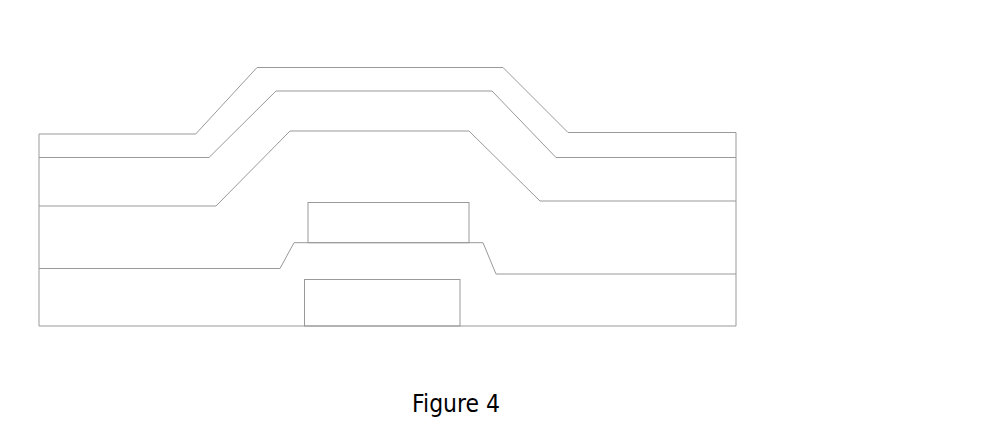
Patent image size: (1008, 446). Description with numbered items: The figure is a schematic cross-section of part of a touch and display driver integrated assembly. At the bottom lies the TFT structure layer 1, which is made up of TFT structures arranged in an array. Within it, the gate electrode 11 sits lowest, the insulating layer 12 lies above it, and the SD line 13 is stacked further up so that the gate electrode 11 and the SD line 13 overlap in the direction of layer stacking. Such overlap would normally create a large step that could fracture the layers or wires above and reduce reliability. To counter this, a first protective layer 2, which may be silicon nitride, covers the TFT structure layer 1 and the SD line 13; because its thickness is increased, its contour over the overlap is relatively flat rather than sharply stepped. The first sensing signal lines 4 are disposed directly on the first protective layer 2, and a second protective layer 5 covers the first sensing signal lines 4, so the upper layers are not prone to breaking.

The TFT structure layer 1 is at (820, 247).
The first protective layer 2 is at (694, 219).
The first sensing signal lines 4 is at (674, 178).
The second protective layer 5 is at (695, 140).
The gate electrode 11 is at (408, 302).
The insulating layer 12 is at (693, 312).
The SD line 13 is at (420, 220).